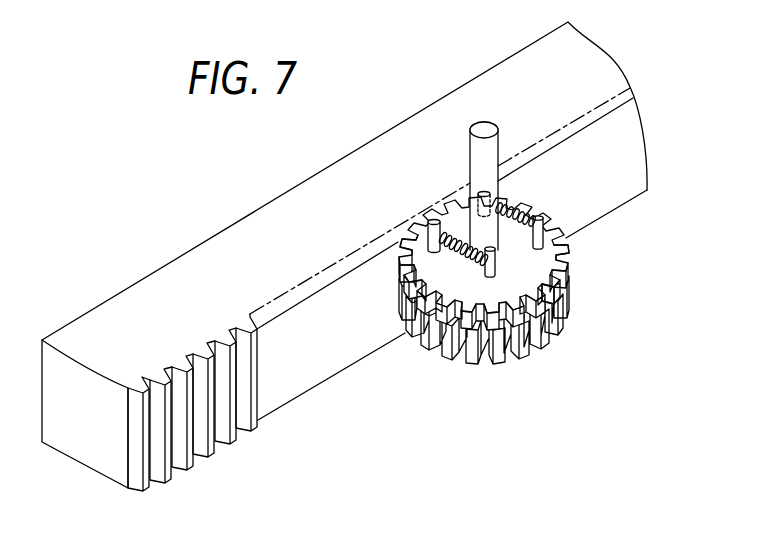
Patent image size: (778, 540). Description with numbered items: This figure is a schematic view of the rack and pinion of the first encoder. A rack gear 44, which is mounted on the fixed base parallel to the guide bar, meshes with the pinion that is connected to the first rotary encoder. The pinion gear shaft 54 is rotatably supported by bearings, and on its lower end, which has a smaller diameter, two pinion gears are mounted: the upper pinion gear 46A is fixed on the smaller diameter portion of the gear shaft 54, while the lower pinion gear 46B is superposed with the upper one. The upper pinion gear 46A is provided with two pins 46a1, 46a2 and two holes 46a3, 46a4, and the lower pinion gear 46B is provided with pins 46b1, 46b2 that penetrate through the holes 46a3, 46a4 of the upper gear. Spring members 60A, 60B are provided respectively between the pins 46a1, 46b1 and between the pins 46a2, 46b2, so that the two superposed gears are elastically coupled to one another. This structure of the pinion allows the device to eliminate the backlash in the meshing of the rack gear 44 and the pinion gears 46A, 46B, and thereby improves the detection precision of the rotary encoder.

The rack gear 44 is at (563, 121).
The upper pinion gear 46A is at (553, 294).
The lower pinion gear 46B is at (449, 339).
The pin 46a1 is at (553, 297).
The pin 46a2 is at (481, 193).
The hole 46a3 is at (400, 233).
The hole 46a4 is at (565, 258).
The pin 46b1 is at (429, 226).
The pin 46b2 is at (548, 223).
The pinion gear shaft 54 is at (483, 160).
The spring member 60A is at (458, 236).
The spring member 60B is at (525, 207).